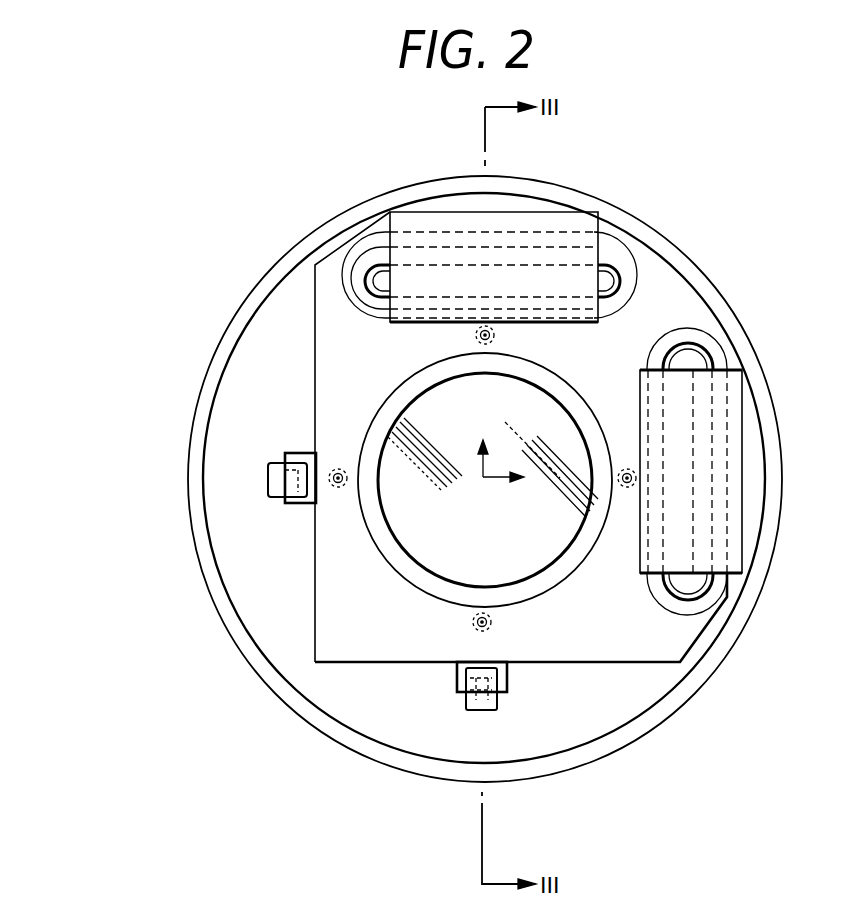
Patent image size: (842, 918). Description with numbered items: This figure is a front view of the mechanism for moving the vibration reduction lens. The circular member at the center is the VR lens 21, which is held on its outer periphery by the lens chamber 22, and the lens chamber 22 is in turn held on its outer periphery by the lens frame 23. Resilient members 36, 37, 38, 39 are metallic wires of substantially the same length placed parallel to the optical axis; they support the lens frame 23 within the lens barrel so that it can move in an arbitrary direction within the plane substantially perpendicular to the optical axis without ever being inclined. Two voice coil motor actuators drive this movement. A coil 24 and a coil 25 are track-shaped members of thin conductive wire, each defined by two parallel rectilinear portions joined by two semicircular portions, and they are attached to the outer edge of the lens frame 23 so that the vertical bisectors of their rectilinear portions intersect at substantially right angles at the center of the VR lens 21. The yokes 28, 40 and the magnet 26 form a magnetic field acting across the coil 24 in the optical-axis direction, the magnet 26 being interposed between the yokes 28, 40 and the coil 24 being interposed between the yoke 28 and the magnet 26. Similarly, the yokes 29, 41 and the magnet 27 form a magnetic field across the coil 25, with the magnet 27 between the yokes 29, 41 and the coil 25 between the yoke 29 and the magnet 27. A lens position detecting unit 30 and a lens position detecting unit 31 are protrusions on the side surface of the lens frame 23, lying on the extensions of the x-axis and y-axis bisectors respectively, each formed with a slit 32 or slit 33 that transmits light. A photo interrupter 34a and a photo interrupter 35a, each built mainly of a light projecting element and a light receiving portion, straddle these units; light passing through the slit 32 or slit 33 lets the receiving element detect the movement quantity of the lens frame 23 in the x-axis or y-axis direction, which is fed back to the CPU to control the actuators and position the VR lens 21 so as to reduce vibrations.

The VR lens 21 is at (437, 540).
The lens chamber 22 is at (435, 588).
The lens frame 23 is at (330, 652).
The coil 24 is at (645, 250).
The coil 25 is at (703, 355).
The magnet 26 is at (583, 276).
The magnet 27 is at (683, 560).
The yoke 28 is at (553, 272).
The yoke 29 is at (683, 540).
The lens position detecting unit 30 is at (298, 503).
The lens position detecting unit 31 is at (507, 672).
The slit 32 is at (272, 466).
The slit 33 is at (465, 712).
The photo interrupter 34a is at (272, 488).
The photo interrupter 35a is at (497, 710).
The resilient member 36 is at (476, 337).
The resilient member 37 is at (330, 472).
The resilient member 38 is at (491, 622).
The resilient member 39 is at (630, 487).
The yoke 40 is at (510, 270).
The yoke 41 is at (683, 496).